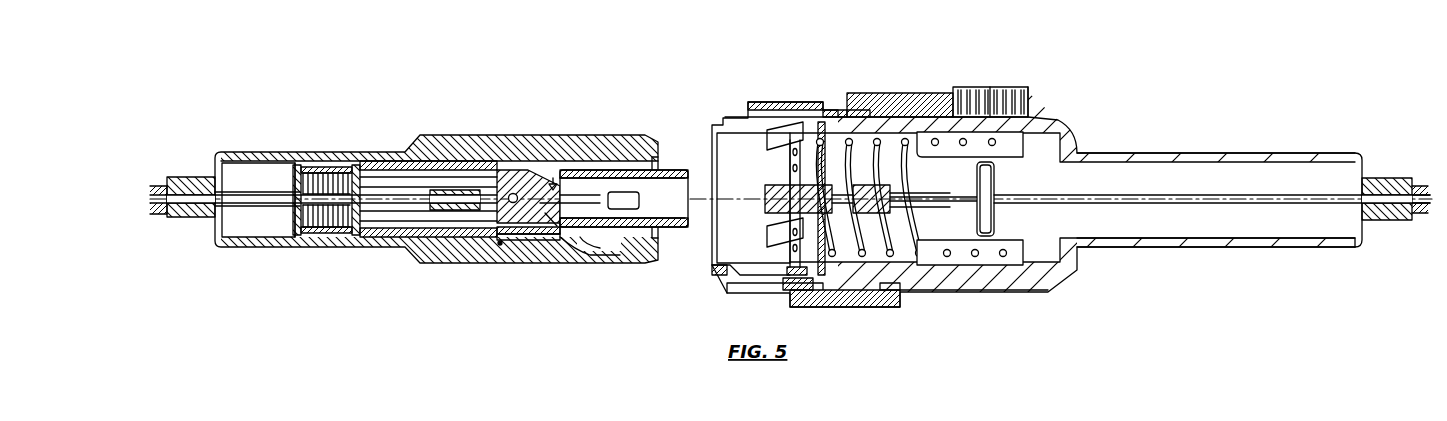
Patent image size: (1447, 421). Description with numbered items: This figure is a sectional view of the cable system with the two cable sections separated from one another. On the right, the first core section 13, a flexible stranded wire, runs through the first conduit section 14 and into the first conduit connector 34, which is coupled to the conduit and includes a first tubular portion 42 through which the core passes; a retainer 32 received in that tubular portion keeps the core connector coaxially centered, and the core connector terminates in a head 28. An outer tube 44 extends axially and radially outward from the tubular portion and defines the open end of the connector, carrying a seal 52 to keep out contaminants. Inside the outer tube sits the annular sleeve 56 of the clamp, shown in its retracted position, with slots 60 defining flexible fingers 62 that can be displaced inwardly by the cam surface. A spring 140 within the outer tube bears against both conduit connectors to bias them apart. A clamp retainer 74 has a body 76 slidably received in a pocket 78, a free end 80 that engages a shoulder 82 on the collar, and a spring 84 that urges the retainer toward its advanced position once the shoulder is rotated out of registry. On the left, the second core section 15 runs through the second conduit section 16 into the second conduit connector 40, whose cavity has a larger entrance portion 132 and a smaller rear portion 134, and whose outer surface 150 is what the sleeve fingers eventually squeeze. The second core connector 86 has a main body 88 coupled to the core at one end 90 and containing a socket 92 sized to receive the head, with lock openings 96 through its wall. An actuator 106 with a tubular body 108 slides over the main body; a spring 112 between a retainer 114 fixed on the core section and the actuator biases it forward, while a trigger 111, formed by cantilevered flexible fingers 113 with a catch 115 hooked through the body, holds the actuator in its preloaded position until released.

The first core section 13 is at (1302, 197).
The first conduit section 14 is at (1423, 190).
The second core section 15 is at (256, 202).
The second conduit section 16 is at (152, 188).
The head 28 is at (785, 192).
The retainer 32 is at (995, 174).
The first conduit connector 34 is at (1154, 148).
The second conduit connector 40 is at (564, 128).
The first tubular portion 42 is at (1268, 246).
The outer tube 44 is at (1023, 289).
The seal 52 is at (829, 279).
The sleeve 56 is at (710, 277).
The slots 60 is at (770, 144).
The fingers 62 is at (785, 252).
The clamp retainer 74 is at (950, 78).
The body 76 is at (910, 104).
The pocket 78 is at (828, 105).
The free end 80 is at (872, 108).
The shoulder 82 is at (860, 108).
The spring 84 is at (996, 92).
The second core connector 86 is at (667, 158).
The main body 88 is at (687, 169).
The one end 90 is at (484, 205).
The socket 92 is at (592, 214).
The lock openings 96 is at (621, 209).
The actuator 106 is at (570, 163).
The body 108 is at (434, 166).
The trigger 111 is at (500, 243).
The spring 112 is at (308, 172).
The fingers 113 is at (521, 225).
The retainer 114 is at (294, 235).
The catch 115 is at (551, 230).
The entrance portion 132 is at (609, 250).
The rear portion 134 is at (266, 236).
The spring 140 is at (943, 259).
The outer surface 150 is at (510, 136).